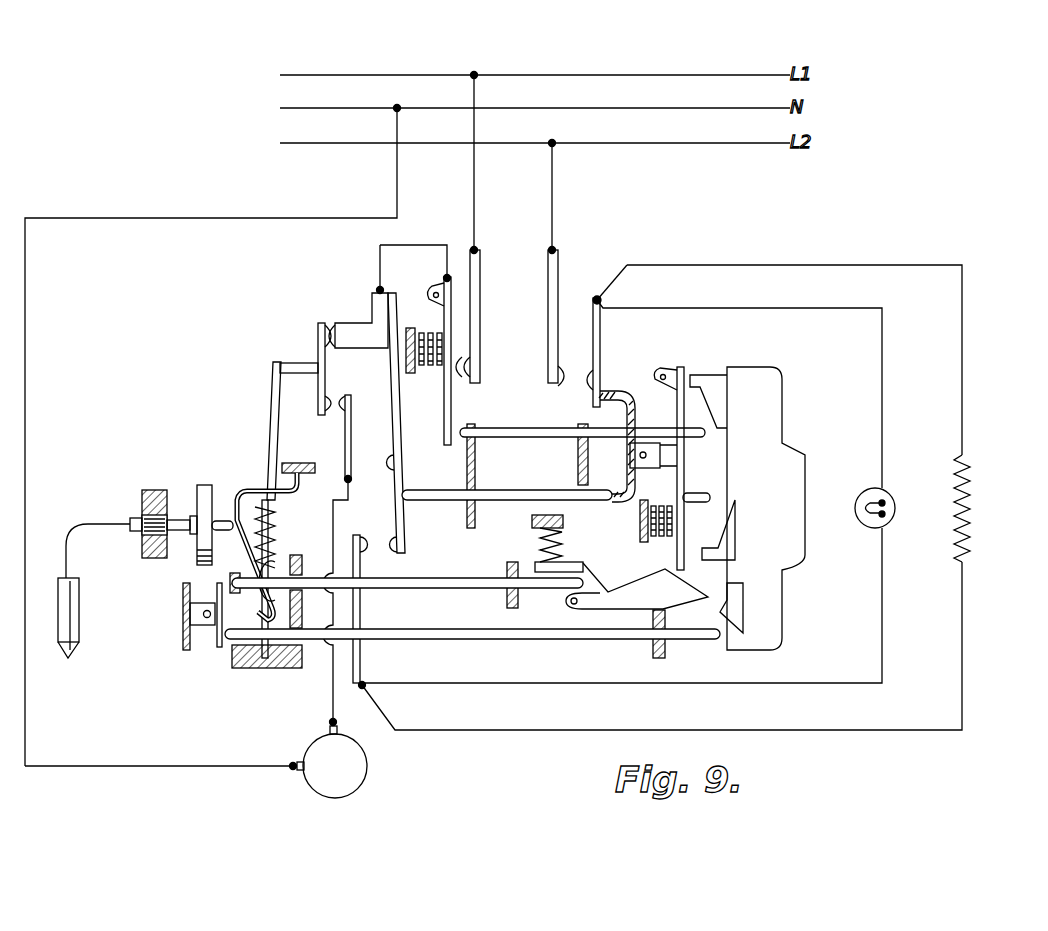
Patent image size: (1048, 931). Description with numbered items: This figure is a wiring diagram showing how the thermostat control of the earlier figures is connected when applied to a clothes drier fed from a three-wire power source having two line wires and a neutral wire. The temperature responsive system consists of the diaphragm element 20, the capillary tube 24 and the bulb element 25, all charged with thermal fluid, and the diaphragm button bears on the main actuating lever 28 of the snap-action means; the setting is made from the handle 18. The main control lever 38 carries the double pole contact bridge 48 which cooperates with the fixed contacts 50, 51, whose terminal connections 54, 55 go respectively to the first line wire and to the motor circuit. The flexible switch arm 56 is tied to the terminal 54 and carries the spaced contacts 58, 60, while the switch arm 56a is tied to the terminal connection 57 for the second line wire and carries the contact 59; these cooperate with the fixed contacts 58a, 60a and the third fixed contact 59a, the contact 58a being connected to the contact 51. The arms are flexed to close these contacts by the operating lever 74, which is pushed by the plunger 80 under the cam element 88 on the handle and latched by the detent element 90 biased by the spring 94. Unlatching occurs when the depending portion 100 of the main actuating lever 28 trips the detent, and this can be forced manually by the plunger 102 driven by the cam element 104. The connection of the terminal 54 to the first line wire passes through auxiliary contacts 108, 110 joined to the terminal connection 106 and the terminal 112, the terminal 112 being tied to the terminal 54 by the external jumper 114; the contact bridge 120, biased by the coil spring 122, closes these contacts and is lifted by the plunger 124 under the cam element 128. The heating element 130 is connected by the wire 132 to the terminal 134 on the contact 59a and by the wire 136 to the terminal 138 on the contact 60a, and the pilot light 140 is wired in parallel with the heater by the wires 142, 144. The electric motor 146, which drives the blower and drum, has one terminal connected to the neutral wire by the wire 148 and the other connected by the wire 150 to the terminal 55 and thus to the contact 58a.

The handle 18 is at (783, 402).
The diaphragm element 20 is at (205, 486).
The capillary tube 24 is at (84, 520).
The bulb element 25 is at (79, 603).
The main actuating lever 28 is at (244, 488).
The main control lever 38 is at (270, 430).
The double pole contact bridge 48 is at (318, 335).
The fixed contact 50 is at (333, 325).
The fixed contact 51 is at (340, 402).
The terminal connection 54 is at (372, 343).
The terminal connection 55 is at (345, 440).
The flexible switch arm 56 is at (399, 443).
The flexible switch arm 56a is at (622, 270).
The terminal connection 57 is at (558, 255).
The contact 58 is at (388, 465).
The fixed contact 58a is at (352, 480).
The contact 59 is at (566, 374).
The fixed contact 59a is at (586, 392).
The contact 60 is at (392, 548).
The fixed contact 60a is at (366, 540).
The operating lever 74 is at (677, 550).
The plunger 80 is at (445, 500).
The cam element 88 is at (722, 535).
The detent element 90 is at (606, 582).
The spring 94 is at (540, 545).
The depending portion 100 is at (455, 578).
The plunger 102 is at (517, 640).
The cam element 104 is at (740, 612).
The terminal connection 106 is at (480, 255).
The contact 108 is at (465, 367).
The contact 110 is at (458, 390).
The terminal 112 is at (440, 287).
The external jumper 114 is at (435, 245).
The contact bridge 120 is at (444, 418).
The coil spring 122 is at (428, 368).
The plunger 124 is at (522, 438).
The cam element 128 is at (700, 385).
The heating element 130 is at (966, 462).
The wire 132 is at (778, 265).
The terminal 134 is at (600, 325).
The wire 136 is at (557, 709).
The terminal 138 is at (365, 662).
The pilot light 140 is at (868, 489).
The wire 142 is at (782, 310).
The wire 144 is at (855, 684).
The electric motor 146 is at (368, 766).
The wire 148 is at (194, 766).
The wire 150 is at (330, 697).